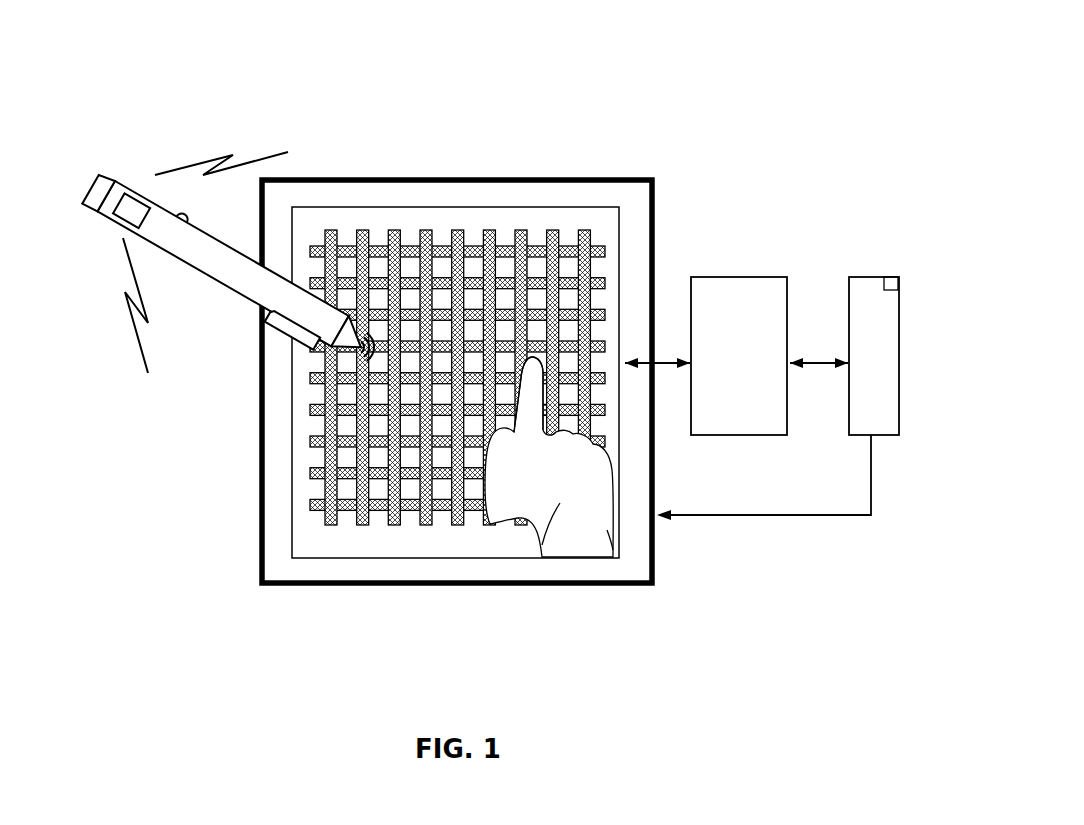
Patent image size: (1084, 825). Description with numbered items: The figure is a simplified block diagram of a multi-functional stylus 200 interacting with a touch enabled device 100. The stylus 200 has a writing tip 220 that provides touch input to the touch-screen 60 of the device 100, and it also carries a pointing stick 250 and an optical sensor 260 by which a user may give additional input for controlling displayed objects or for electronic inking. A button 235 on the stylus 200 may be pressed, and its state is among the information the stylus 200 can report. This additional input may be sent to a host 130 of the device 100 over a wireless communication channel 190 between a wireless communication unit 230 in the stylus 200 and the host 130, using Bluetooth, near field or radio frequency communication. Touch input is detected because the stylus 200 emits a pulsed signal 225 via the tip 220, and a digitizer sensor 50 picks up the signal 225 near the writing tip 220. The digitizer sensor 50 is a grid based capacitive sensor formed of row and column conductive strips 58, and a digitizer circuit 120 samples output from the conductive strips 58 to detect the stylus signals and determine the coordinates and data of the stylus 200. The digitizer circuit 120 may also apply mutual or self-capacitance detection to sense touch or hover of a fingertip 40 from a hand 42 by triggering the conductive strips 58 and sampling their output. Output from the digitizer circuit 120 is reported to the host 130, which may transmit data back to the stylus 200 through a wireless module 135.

The touch enabled device 100 is at (452, 90).
The stylus 200 is at (208, 245).
The pointing stick 250 is at (98, 193).
The wireless communication unit 230 is at (131, 210).
The button 235 is at (182, 216).
The optical sensor 260 is at (292, 330).
The writing tip 220 is at (351, 337).
The signal 225 is at (366, 358).
The wireless communication channel 190 is at (207, 162).
The touch-screen 60 is at (582, 177).
The digitizer sensor 50 is at (620, 258).
The conductive strips 58 is at (520, 230).
The fingertip 40 is at (526, 372).
The hand 42 is at (535, 516).
The digitizer circuit 120 is at (720, 277).
The host 130 is at (906, 318).
The wireless module 135 is at (898, 292).